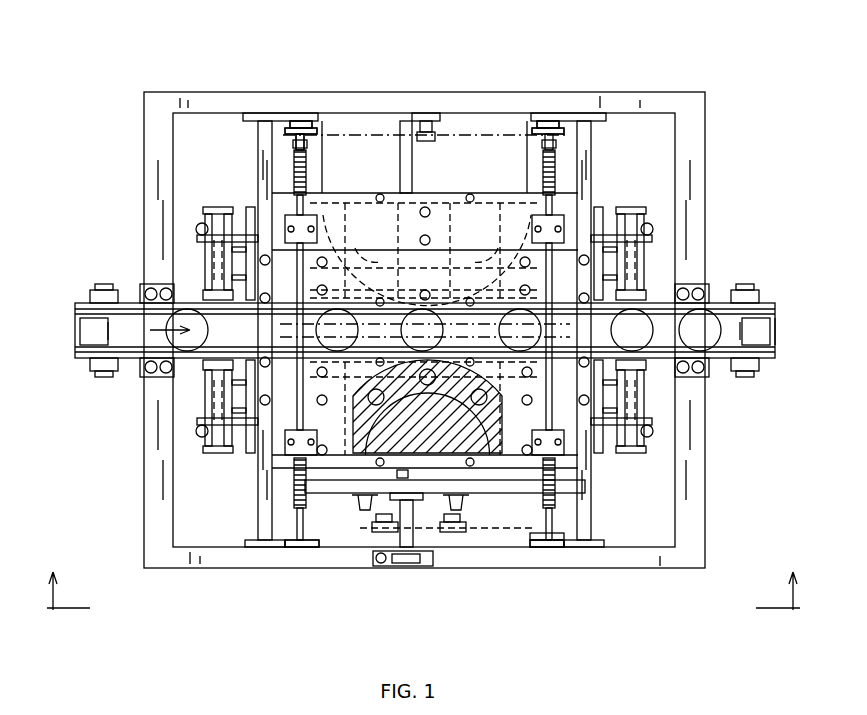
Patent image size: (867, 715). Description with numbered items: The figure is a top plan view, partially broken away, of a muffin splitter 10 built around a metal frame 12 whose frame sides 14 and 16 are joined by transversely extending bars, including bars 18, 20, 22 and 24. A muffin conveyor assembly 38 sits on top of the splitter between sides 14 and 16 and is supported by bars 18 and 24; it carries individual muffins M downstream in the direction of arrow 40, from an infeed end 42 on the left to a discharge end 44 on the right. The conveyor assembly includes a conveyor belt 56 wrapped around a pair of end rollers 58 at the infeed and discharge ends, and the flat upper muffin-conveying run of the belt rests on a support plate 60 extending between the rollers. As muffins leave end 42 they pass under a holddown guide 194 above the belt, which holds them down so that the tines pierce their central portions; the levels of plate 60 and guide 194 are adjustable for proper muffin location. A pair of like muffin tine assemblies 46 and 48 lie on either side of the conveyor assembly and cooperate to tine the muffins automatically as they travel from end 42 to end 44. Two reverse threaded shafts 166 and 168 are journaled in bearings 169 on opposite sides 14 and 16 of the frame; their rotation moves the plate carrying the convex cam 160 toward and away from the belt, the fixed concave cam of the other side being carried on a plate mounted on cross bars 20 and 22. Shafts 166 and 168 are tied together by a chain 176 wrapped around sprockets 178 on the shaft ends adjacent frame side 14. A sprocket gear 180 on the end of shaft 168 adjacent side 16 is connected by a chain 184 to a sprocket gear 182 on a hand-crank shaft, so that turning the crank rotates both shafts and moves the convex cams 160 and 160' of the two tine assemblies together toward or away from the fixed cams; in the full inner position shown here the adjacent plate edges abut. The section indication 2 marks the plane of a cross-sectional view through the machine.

The muffin splitter 10 is at (652, 75).
The metal frame 12 is at (720, 153).
The frame side 14 is at (421, 95).
The frame side 16 is at (622, 570).
The transversely extending bar 18 is at (692, 240).
The transversely extending bar 20 is at (596, 178).
The transversely extending bar 22 is at (257, 143).
The transversely extending bar 24 is at (150, 148).
The muffin conveyor assembly 38 is at (104, 381).
The arrow 40 is at (167, 332).
The infeed end 42 is at (76, 318).
The discharge end 44 is at (773, 312).
The muffin tine assembly 46 is at (217, 467).
The muffin tine assembly 48 is at (218, 191).
The conveyor belt 56 is at (773, 333).
The end roller 58 is at (98, 357).
The support plate 60 is at (132, 303).
The convex cam 160 is at (437, 435).
The convex cam 160' is at (427, 231).
The reverse threaded shaft 166 is at (308, 185).
The reverse threaded shaft 168 is at (540, 182).
The bearing 169 is at (295, 118).
The chain 176 is at (347, 128).
The sprocket 178 is at (320, 132).
The sprocket gear 180 is at (547, 538).
The sprocket gear 182 is at (398, 515).
The chain 184 is at (507, 528).
The holddown guide 194 is at (215, 318).
The muffin m is at (240, 327).
The section line 2- 2 is at (423, 610).